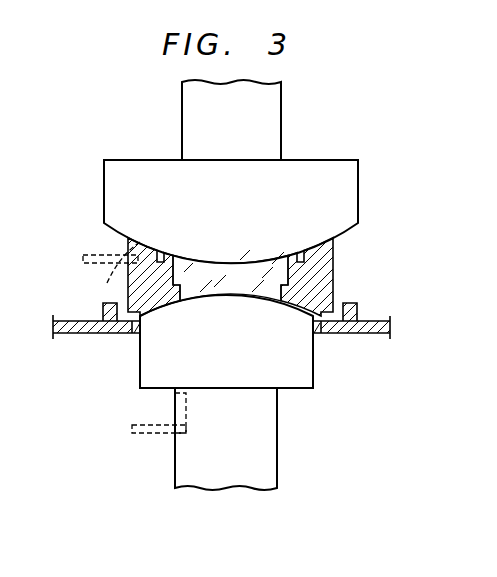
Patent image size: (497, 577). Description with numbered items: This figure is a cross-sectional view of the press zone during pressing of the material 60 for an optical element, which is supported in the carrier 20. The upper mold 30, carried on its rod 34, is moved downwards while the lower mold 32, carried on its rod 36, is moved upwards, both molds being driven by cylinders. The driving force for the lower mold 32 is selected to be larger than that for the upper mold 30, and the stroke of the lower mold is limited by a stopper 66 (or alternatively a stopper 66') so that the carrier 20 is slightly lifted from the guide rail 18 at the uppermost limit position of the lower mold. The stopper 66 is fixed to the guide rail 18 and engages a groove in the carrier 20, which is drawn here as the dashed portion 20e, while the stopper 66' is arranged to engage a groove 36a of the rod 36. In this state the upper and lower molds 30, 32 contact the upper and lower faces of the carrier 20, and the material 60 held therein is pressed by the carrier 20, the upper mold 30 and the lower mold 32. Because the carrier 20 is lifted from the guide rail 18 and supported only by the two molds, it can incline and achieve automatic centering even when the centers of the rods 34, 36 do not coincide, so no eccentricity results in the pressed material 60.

The rod 34 is at (273, 102).
The upper mold 30 is at (347, 173).
The carrier 20 is at (327, 250).
The material for optical element 60 is at (277, 275).
The lower mold 32 is at (305, 362).
The rod 36 is at (268, 427).
The guide rail 18 is at (73, 320).
The stopper 66 is at (105, 234).
The ring portion 20e is at (106, 268).
The groove 36a is at (180, 408).
The stopper 66' is at (134, 428).